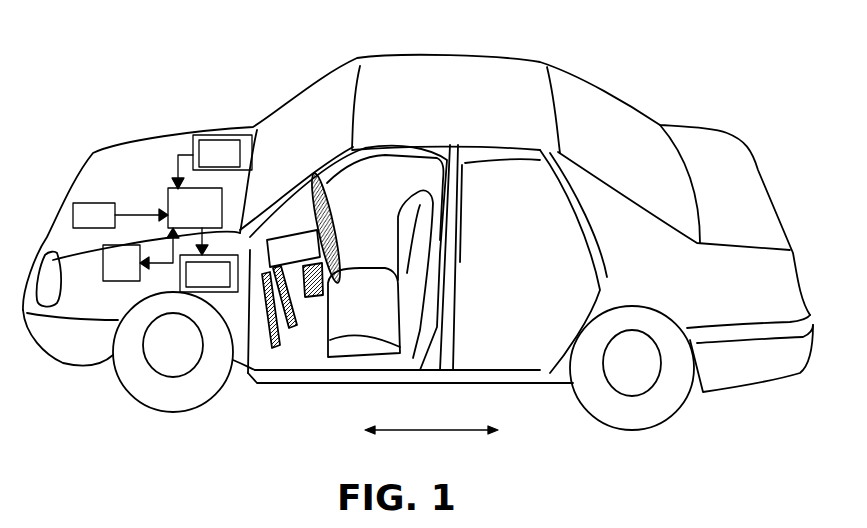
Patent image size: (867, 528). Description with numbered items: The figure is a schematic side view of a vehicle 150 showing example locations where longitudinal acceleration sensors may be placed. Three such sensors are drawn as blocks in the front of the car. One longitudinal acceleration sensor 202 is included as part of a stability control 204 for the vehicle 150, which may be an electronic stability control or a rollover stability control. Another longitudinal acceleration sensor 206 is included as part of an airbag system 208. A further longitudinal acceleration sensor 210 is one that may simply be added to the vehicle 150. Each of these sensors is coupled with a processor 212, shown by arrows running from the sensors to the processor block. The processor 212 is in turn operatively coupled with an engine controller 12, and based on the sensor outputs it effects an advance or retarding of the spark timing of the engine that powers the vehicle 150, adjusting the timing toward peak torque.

The vehicle 150 is at (448, 55).
The airbag system 208 is at (233, 135).
The longitudinal acceleration sensor 206 is at (204, 163).
The processor 212 is at (180, 218).
The longitudinal acceleration sensor 210 is at (79, 225).
The engine controller 12 is at (111, 273).
The stability control 204 is at (227, 292).
The longitudinal acceleration sensor 202 is at (193, 284).